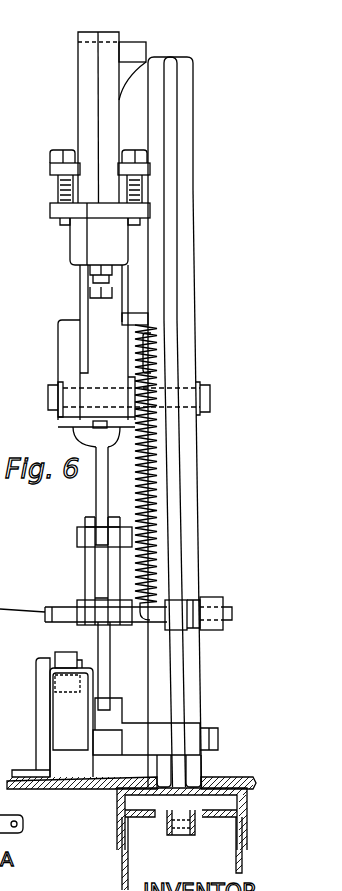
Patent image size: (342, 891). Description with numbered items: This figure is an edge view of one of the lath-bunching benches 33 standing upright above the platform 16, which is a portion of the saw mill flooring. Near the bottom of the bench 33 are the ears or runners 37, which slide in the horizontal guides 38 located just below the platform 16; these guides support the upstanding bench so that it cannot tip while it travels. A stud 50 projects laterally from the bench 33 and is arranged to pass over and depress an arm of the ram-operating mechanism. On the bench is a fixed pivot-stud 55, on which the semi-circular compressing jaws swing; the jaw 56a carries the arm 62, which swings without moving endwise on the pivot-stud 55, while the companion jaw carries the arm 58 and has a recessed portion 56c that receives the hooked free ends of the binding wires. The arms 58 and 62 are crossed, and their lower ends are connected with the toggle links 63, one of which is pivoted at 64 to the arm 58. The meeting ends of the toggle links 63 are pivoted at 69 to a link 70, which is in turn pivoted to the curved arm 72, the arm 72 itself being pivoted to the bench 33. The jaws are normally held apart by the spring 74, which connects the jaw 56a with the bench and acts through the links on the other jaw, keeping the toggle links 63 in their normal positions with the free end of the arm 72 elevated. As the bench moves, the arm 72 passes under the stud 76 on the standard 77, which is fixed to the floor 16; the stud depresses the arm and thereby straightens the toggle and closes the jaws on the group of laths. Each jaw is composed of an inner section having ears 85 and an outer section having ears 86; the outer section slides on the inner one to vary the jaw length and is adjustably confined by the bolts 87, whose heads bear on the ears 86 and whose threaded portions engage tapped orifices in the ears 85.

The platform 16 is at (223, 774).
The bench 33 is at (190, 477).
The ear or runner 37 is at (142, 802).
The horizontal guide 38 is at (118, 817).
The stud 50 is at (212, 597).
The pivot-stud 55 is at (48, 398).
The compressing jaw 56a is at (114, 342).
The recessed portion 56c is at (140, 53).
The arm 58 is at (102, 488).
The arm 62 is at (73, 427).
The toggle link 63 is at (120, 575).
The pivot 64 is at (83, 538).
The pivot 69 is at (85, 607).
The link 70 is at (105, 690).
The curved arm 72 is at (90, 717).
The spring 74 is at (137, 462).
The stud 76 is at (58, 657).
The standard 77 is at (42, 722).
The ear 85 is at (58, 213).
The ear 86 is at (50, 172).
The bolt 87 is at (58, 190).